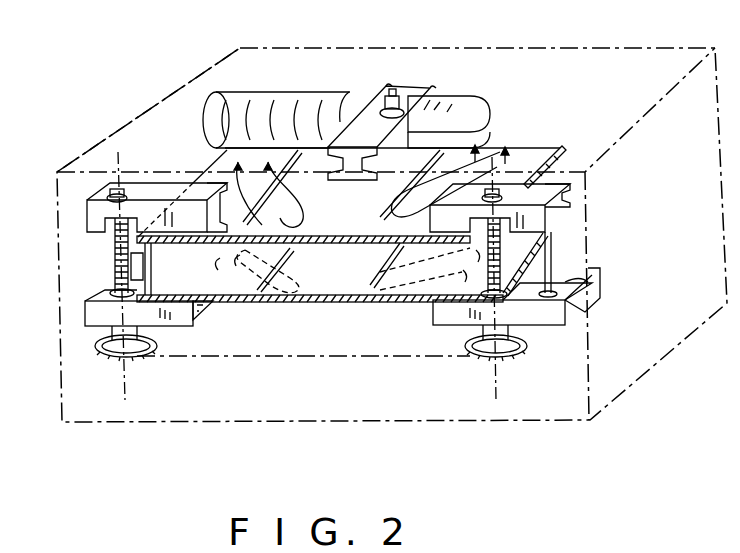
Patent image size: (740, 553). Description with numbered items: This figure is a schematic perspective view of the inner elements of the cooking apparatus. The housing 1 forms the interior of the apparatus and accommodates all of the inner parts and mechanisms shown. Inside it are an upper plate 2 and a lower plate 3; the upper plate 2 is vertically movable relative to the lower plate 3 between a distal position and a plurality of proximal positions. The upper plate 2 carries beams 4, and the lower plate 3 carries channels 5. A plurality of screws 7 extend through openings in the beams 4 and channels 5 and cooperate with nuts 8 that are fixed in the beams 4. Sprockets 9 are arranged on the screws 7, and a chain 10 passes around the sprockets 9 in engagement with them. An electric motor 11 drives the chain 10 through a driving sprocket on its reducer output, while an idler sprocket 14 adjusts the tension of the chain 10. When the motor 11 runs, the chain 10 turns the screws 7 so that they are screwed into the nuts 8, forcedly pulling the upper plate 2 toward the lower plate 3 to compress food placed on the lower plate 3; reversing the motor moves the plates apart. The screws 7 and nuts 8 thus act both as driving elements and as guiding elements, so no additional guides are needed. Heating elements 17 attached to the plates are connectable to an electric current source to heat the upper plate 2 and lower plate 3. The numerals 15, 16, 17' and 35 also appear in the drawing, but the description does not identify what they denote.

The housing 1 is at (612, 58).
The upper plate 2 is at (540, 155).
The lower plate 3 is at (456, 241).
The beams 4 is at (570, 191).
The channels 5 is at (553, 266).
The screws 7 is at (112, 246).
The nuts 8 is at (102, 197).
The sprockets 9 is at (112, 355).
The chain 10 is at (273, 357).
The electric motor 11 is at (216, 130).
The idler sprocket 14 is at (117, 262).
The support block 15 is at (140, 298).
The angle bracket 16 is at (568, 290).
The heating elements 17 is at (388, 171).
The air flow arrows 17' is at (347, 293).
The axis 35 is at (125, 374).